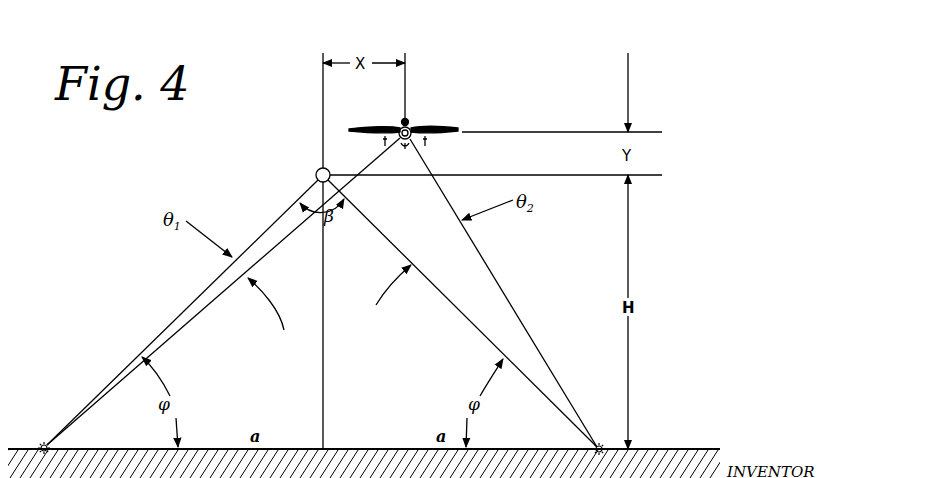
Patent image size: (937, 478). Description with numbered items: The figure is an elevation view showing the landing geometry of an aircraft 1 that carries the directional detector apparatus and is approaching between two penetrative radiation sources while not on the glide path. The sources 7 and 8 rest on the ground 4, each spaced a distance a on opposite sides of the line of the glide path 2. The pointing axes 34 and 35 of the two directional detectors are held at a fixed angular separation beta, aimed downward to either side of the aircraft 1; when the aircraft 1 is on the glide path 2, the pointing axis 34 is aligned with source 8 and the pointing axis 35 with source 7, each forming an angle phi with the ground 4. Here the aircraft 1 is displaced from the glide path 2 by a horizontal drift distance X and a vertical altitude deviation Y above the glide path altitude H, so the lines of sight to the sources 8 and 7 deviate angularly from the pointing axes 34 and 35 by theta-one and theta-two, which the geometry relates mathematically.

The aircraft 1 is at (412, 124).
The glide path 2 is at (316, 174).
The ground 4 is at (687, 449).
The source 7 is at (44, 442).
The source 8 is at (598, 442).
The pointing axis 34 is at (478, 334).
The pointing axis 35 is at (178, 318).